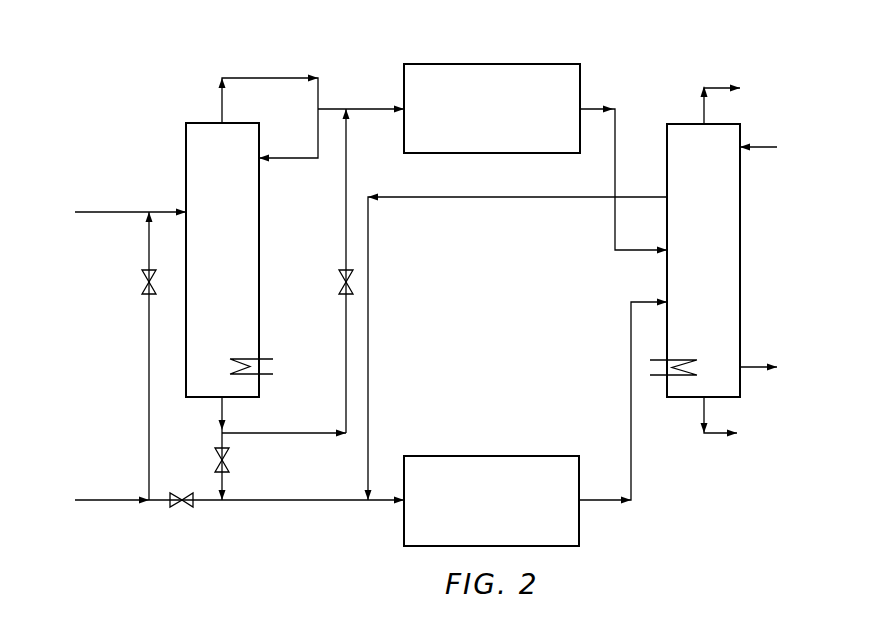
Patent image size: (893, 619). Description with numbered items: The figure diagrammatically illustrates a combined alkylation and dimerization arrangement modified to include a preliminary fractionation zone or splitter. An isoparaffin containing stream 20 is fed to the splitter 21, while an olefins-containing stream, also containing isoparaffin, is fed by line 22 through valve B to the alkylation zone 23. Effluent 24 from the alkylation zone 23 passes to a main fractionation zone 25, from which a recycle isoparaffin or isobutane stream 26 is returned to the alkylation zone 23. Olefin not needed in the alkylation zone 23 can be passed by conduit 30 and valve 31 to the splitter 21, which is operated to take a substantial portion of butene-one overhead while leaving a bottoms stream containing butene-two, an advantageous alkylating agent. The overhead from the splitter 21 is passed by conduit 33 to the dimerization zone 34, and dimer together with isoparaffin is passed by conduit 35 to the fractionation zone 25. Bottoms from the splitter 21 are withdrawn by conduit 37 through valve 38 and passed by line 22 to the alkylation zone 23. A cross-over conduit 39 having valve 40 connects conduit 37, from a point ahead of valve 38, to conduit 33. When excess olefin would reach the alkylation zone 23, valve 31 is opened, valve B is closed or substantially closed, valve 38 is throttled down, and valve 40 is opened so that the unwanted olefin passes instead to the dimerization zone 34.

The isoparaffin containing stream 20 is at (112, 216).
The splitter 21 is at (260, 263).
The olefins-containing stream 22 is at (112, 505).
The alkylation zone 23 is at (483, 456).
The effluent 24 is at (631, 427).
The main fractionation zone 25 is at (742, 264).
The recycle isoparaffin stream 26 is at (483, 197).
The conduit 30 is at (148, 420).
The valve 31 is at (141, 292).
The conduit 33 is at (329, 108).
The dimerization zone 34 is at (483, 64).
The conduit 35 is at (615, 231).
The conduit 37 is at (221, 412).
The valve 38 is at (215, 451).
The cross-over conduit 39 is at (294, 432).
The valve 40 is at (340, 292).
The valve B is at (172, 506).